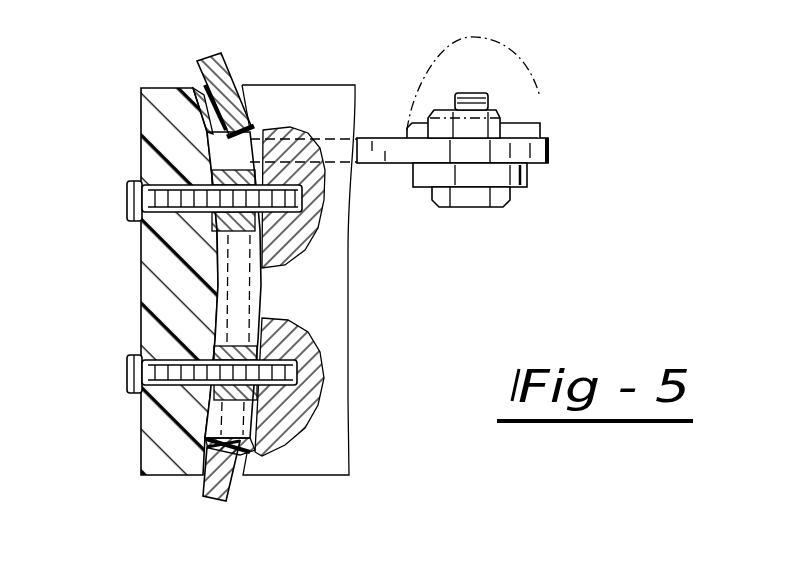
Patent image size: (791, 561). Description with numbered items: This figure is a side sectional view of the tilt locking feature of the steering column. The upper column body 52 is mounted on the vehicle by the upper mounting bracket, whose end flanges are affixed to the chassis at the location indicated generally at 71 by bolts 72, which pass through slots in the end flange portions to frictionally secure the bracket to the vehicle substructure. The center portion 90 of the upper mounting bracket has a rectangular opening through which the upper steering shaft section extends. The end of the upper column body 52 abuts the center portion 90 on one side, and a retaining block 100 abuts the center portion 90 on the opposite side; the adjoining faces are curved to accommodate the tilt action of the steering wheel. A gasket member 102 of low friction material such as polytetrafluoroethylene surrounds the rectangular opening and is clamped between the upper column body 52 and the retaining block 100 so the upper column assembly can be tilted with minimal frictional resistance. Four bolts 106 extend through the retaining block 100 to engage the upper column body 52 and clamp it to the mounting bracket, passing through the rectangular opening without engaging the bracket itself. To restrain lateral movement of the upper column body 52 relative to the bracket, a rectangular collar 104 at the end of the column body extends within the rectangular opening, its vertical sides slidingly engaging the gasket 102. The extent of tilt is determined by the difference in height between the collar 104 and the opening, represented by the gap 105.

The upper column body 52 is at (337, 261).
The chassis attachment location 71 is at (523, 112).
The bolts 72 is at (500, 207).
The center portion 90 is at (218, 57).
The retaining block 100 is at (138, 102).
The gasket member 102 is at (205, 465).
The rectangular collar 104 is at (240, 292).
The gap 105 is at (217, 150).
The bolts 106 is at (127, 207).